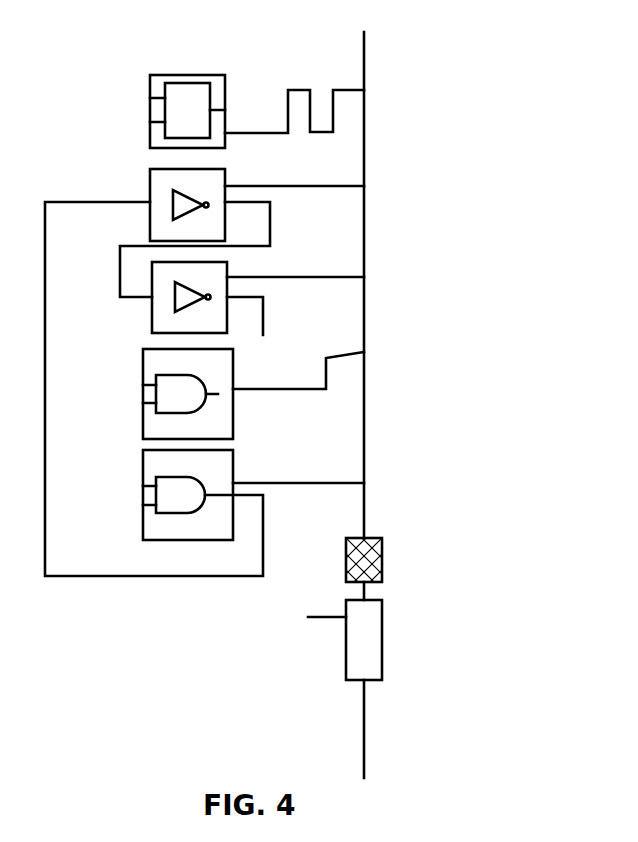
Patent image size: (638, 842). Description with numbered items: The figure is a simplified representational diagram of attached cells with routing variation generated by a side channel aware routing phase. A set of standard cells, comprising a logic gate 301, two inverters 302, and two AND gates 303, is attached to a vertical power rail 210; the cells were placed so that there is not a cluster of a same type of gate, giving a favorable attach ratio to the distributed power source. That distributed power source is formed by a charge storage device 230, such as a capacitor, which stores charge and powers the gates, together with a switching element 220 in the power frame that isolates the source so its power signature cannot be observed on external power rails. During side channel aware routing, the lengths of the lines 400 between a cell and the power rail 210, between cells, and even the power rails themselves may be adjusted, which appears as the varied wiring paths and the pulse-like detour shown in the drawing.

The power rail 210 is at (365, 226).
The switching element 220 is at (383, 641).
The charge storage device 230 is at (383, 538).
The logic gate 301 is at (150, 98).
The inverter 302 is at (150, 182).
The AND gate 303 is at (143, 425).
The line 400 is at (303, 91).